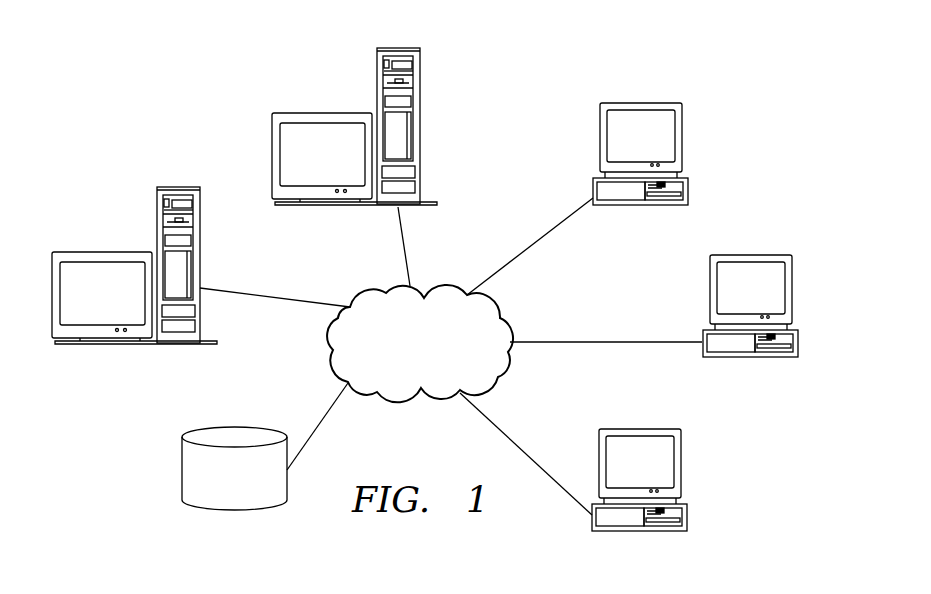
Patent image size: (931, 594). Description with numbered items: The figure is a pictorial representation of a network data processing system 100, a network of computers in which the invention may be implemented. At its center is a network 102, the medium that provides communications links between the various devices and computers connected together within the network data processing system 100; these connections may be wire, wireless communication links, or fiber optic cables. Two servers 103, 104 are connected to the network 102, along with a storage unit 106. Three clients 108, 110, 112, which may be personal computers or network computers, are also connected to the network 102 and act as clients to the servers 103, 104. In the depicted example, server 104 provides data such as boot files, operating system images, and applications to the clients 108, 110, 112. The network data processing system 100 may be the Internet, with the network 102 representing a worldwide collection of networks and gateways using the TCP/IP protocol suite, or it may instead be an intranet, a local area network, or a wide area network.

The network data processing system 100 is at (207, 96).
The network 102 is at (438, 372).
The server 103 is at (377, 70).
The server 104 is at (157, 207).
The storage unit 106 is at (182, 468).
The client 108 is at (682, 143).
The client 110 is at (792, 292).
The client 112 is at (682, 470).